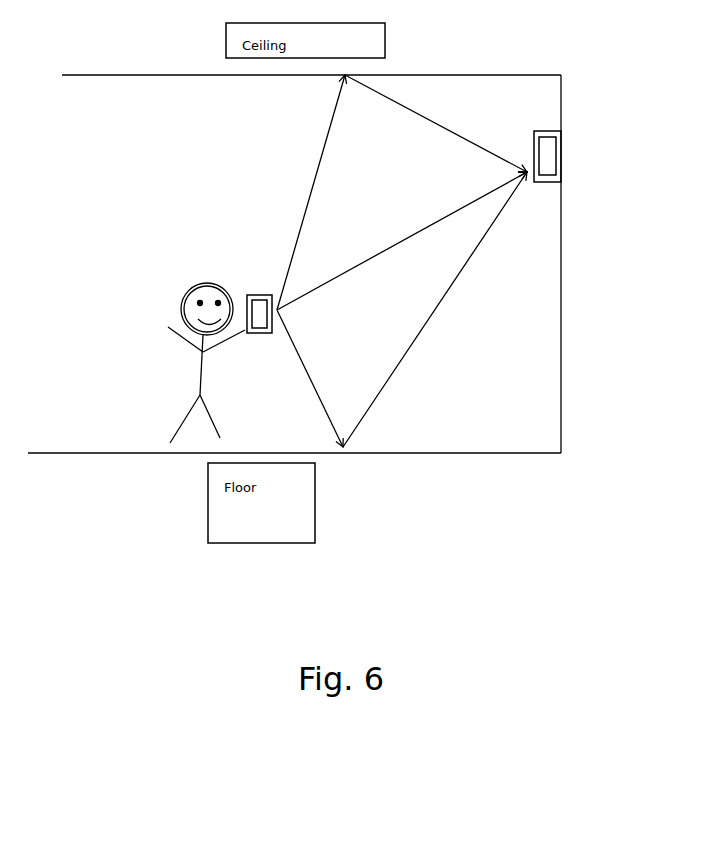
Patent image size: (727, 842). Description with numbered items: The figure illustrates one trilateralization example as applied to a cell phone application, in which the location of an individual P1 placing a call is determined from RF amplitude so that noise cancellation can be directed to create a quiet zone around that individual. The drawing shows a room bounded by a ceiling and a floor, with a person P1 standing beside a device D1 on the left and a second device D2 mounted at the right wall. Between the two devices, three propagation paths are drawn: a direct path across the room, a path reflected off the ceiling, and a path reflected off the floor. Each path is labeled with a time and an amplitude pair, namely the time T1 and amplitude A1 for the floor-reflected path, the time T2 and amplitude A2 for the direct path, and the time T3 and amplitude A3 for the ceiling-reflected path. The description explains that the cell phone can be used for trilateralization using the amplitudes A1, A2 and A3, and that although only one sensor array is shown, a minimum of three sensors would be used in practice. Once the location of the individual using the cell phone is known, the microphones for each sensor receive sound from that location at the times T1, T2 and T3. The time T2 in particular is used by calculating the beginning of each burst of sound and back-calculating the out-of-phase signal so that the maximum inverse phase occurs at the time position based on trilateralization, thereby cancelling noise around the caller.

The person P1 is at (223, 330).
The first device (transmitter) D1 is at (257, 346).
The second device (receiver) D2 is at (587, 147).
The time of sound reception T1 is at (402, 309).
The RF amplitude A1 is at (402, 309).
The time position for phase cancellation T2 is at (402, 242).
The RF amplitude A2 is at (402, 242).
The time of sound reception T3 is at (402, 192).
The RF amplitude A3 is at (402, 192).